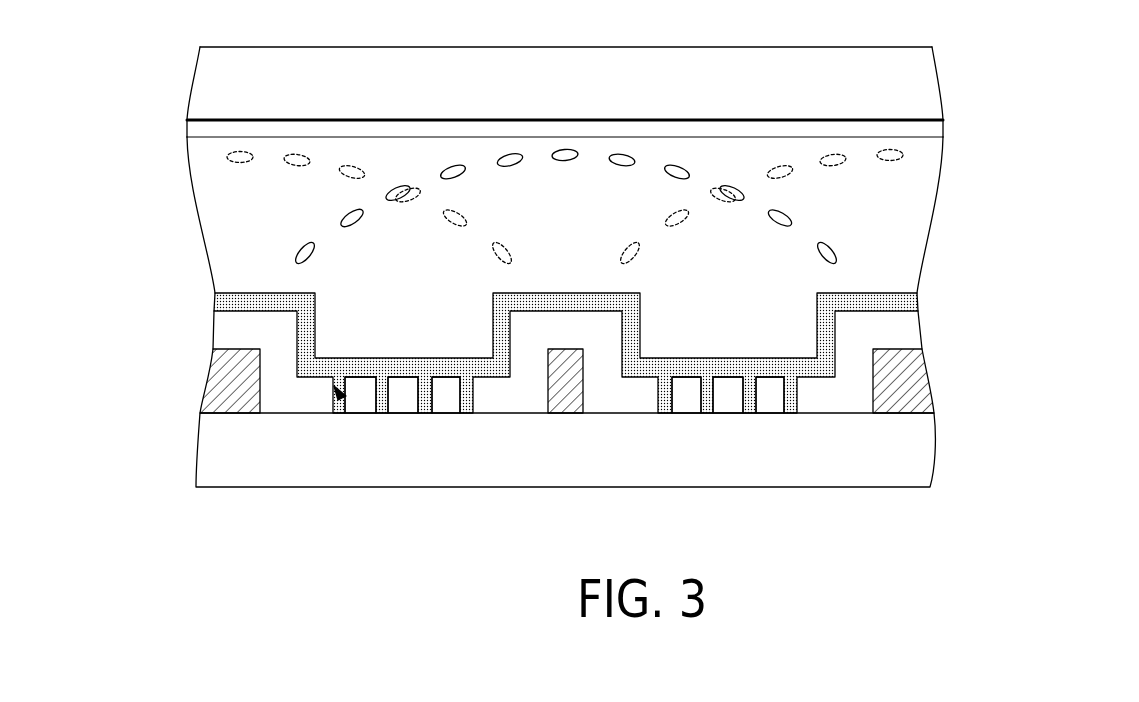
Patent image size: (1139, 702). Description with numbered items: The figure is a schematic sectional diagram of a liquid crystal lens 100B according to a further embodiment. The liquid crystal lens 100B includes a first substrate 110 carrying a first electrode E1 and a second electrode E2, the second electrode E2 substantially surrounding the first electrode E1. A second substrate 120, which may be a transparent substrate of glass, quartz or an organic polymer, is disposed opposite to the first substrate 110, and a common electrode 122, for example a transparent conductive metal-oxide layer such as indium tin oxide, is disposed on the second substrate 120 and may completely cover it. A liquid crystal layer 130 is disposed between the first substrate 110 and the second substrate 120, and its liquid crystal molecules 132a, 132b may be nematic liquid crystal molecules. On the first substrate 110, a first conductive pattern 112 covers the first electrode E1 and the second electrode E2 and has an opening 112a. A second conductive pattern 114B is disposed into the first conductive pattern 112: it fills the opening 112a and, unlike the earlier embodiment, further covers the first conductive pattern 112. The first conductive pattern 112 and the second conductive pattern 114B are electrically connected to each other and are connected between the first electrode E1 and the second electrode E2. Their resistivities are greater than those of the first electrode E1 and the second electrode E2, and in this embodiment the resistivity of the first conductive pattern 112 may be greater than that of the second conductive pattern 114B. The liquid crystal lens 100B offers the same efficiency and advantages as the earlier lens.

The liquid crystal lens 100B is at (1100, 557).
The first substrate 110 is at (912, 463).
The first conductive pattern 112 is at (487, 390).
The opening 112a is at (339, 399).
The second conductive pattern 114B is at (903, 302).
The second substrate 120 is at (927, 83).
The common electrode 122 is at (928, 132).
The liquid crystal layer 130 is at (915, 228).
The liquid crystal molecules 132a is at (903, 155).
The liquid crystal molecules 132b is at (838, 246).
The first electrode E1 is at (560, 402).
The second electrode E2 is at (212, 382).